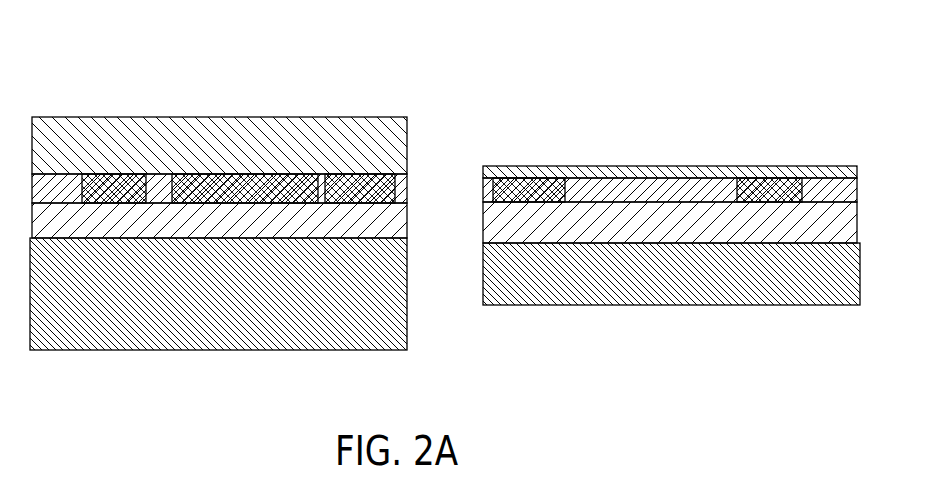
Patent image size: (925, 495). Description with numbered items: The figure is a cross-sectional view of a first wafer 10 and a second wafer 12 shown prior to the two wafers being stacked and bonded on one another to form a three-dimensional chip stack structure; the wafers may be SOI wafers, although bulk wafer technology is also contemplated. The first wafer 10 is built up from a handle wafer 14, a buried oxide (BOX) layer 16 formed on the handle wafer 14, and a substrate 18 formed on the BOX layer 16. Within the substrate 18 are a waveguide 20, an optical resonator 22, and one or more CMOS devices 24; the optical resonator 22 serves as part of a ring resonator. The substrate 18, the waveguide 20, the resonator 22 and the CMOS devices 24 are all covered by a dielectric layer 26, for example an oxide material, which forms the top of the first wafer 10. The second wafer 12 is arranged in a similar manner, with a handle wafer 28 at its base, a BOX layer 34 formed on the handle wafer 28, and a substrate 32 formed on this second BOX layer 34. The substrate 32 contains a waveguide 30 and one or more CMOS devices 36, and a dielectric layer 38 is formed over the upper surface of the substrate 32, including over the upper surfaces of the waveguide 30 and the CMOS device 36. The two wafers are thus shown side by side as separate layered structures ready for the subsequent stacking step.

The first wafer 10 is at (430, 104).
The second wafer 12 is at (616, 147).
The handle wafer 14 is at (395, 322).
The buried oxide (BOX) layer 16 is at (395, 222).
The substrate 18 is at (407, 193).
The waveguide 20 is at (133, 178).
The optical resonator 22 is at (210, 180).
The CMOS devices 24 is at (407, 176).
The dielectric layer 26 is at (297, 125).
The handle wafer 28 is at (630, 283).
The waveguide 30 is at (760, 180).
The substrate 32 is at (497, 178).
The BOX layer 34 is at (505, 225).
The CMOS devices 36 is at (530, 182).
The dielectric layer 38 is at (692, 166).